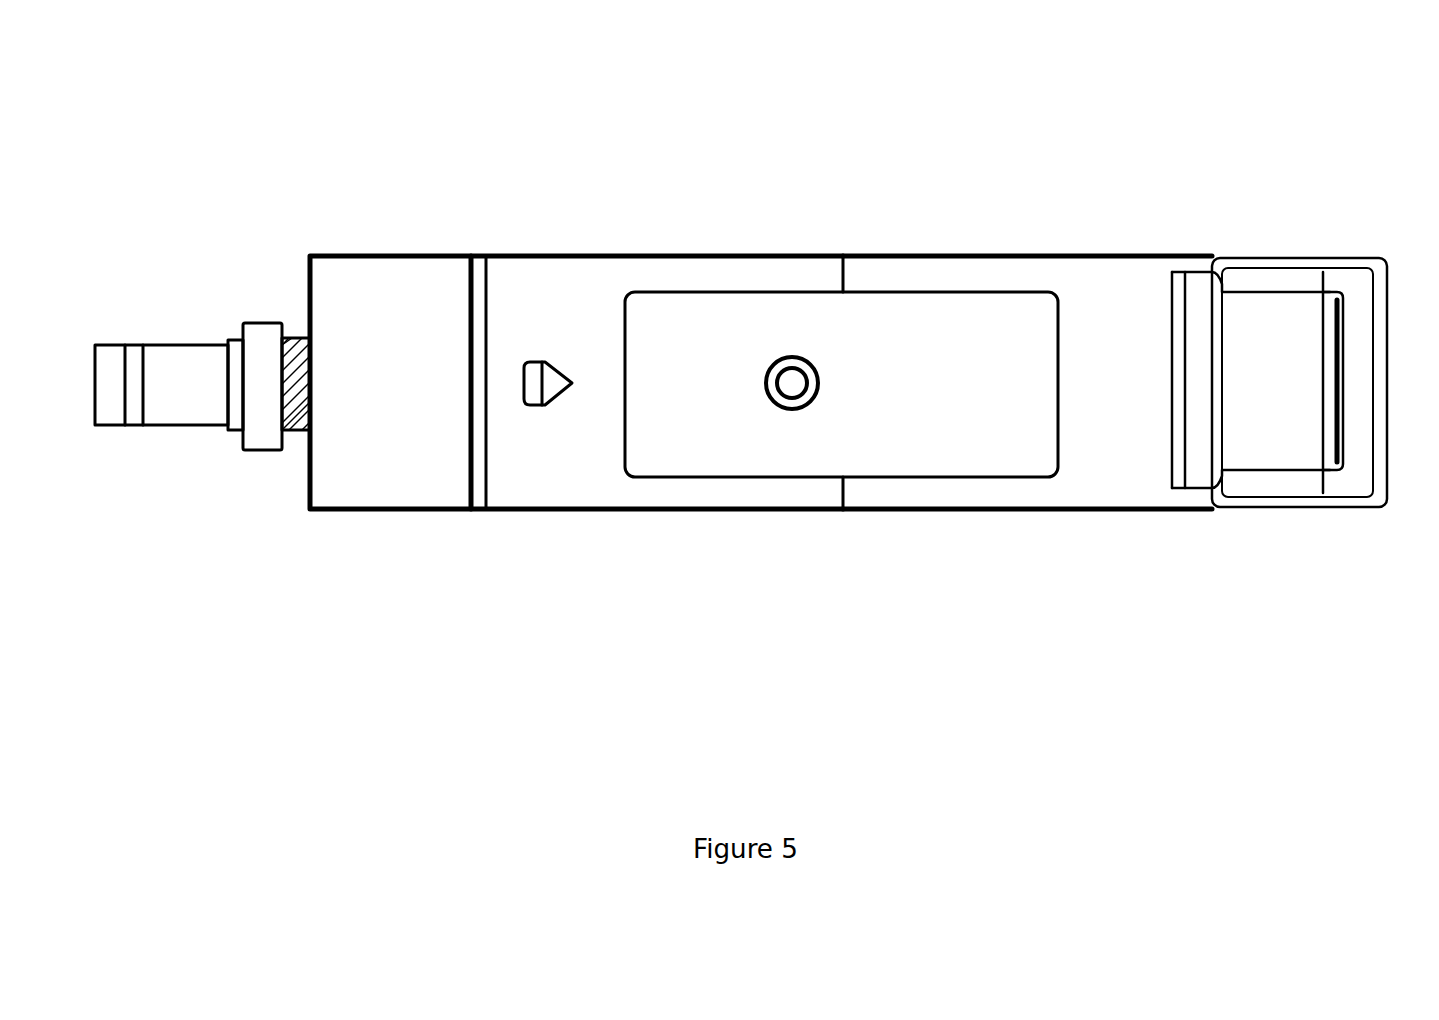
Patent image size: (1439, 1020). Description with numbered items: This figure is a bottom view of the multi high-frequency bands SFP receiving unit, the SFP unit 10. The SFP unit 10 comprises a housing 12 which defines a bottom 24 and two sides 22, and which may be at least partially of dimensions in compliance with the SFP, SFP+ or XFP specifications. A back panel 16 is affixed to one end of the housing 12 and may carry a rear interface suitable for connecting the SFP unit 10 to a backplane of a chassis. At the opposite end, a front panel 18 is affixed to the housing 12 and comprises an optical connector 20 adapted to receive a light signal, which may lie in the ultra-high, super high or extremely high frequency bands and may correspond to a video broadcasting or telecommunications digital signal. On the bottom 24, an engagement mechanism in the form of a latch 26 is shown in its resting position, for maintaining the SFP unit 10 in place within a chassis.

The SFP unit 10 is at (1132, 65).
The housing 12 is at (1096, 372).
The back panel 16 is at (1392, 331).
The front panel 18 is at (306, 255).
The optical connector 20 is at (200, 400).
The sides 22 is at (690, 252).
The bottom 24 is at (755, 440).
The latch 26 is at (542, 407).